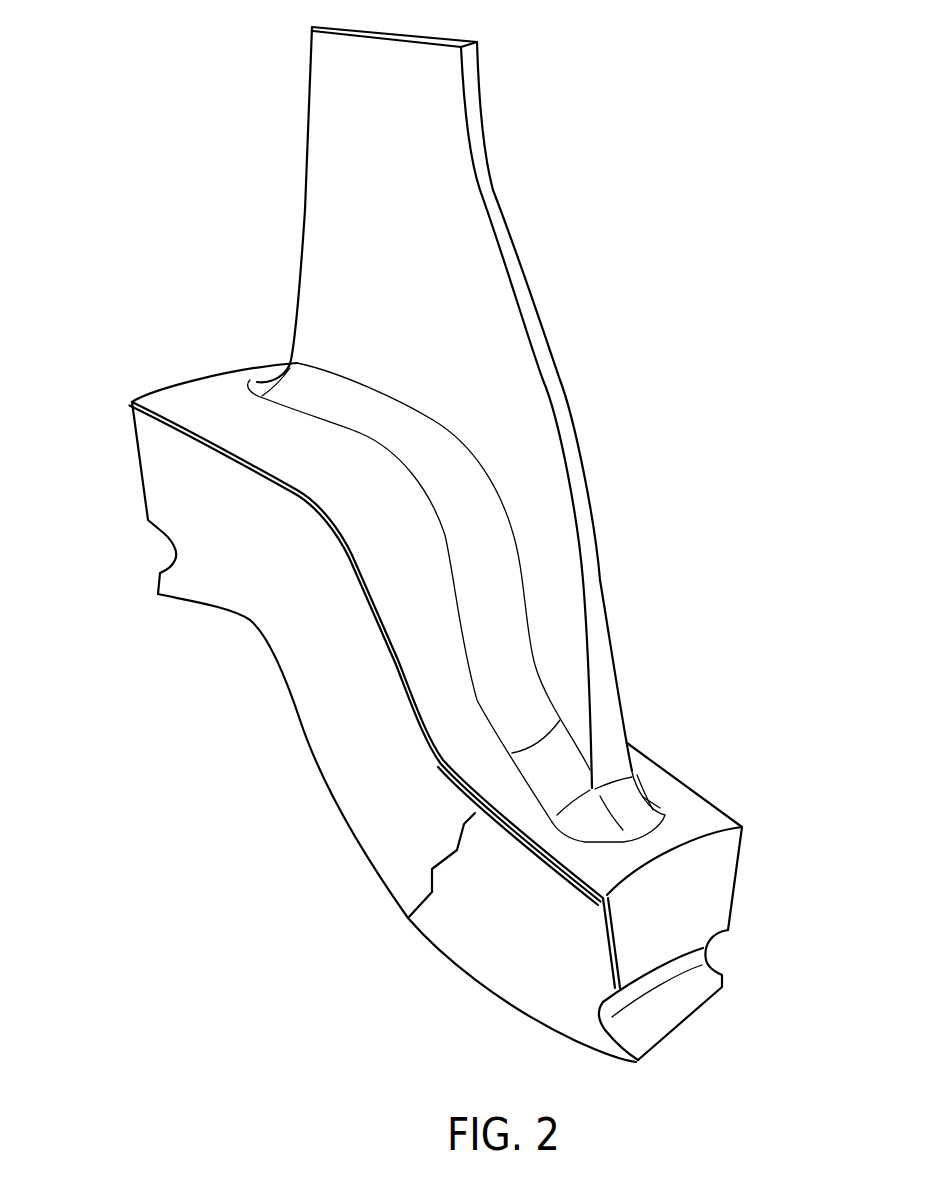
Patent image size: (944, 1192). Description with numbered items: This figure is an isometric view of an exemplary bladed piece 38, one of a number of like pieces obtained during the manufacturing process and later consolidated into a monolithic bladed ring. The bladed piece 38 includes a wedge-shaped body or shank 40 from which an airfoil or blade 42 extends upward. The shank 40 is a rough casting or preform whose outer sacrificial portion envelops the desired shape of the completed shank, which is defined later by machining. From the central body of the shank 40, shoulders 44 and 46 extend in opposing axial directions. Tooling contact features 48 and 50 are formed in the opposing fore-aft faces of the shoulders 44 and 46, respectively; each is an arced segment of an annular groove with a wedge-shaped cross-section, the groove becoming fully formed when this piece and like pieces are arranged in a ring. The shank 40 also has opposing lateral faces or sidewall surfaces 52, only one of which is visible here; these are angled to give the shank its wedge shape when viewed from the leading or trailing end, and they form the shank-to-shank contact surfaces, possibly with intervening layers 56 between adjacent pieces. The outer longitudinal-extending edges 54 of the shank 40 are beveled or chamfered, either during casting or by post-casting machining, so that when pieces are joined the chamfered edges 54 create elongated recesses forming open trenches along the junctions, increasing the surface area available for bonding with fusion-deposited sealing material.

The bladed piece 38 is at (127, 287).
The shank 40 is at (745, 842).
The airfoil 42 is at (305, 178).
The shoulder 44 is at (162, 397).
The shoulder 46 is at (700, 803).
The tooling contact feature 48 is at (155, 533).
The tooling contact feature 50 is at (720, 967).
The sidewall surface 52 is at (388, 757).
The chamfered edge 54 is at (332, 513).
The layer 56 is at (434, 946).